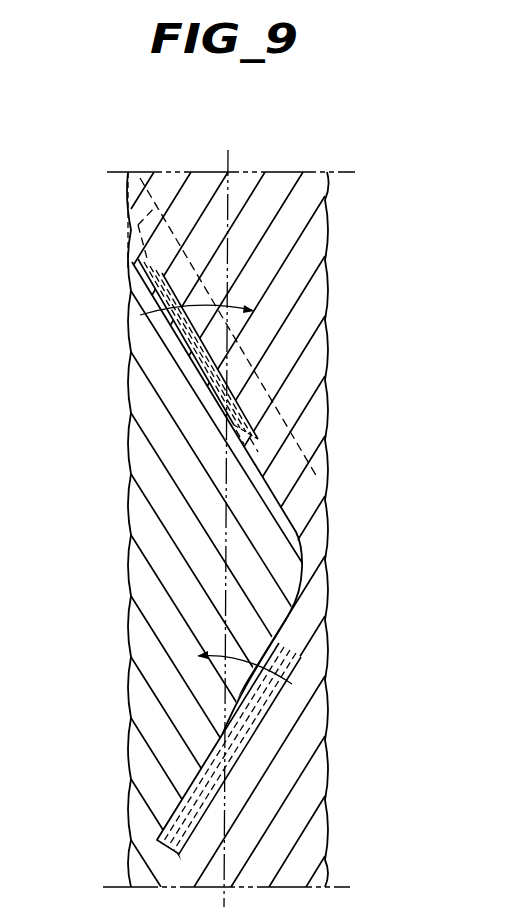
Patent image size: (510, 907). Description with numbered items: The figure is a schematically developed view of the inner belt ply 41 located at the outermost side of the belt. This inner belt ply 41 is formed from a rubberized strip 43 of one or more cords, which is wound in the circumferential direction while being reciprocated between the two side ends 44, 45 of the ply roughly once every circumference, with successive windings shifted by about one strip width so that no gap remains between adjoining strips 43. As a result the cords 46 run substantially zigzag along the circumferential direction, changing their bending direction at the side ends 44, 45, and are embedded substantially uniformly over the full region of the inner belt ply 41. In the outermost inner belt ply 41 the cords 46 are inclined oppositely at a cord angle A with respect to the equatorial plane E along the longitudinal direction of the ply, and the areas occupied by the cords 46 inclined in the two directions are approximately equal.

The inner belt ply 41 is at (224, 515).
The rubberized strip 43 is at (310, 512).
The side end of the ply 44 is at (128, 177).
The side end of the ply 45 is at (326, 878).
The cords 46 is at (183, 322).
The cord angle A is at (216, 485).
The equatorial plane E is at (229, 164).